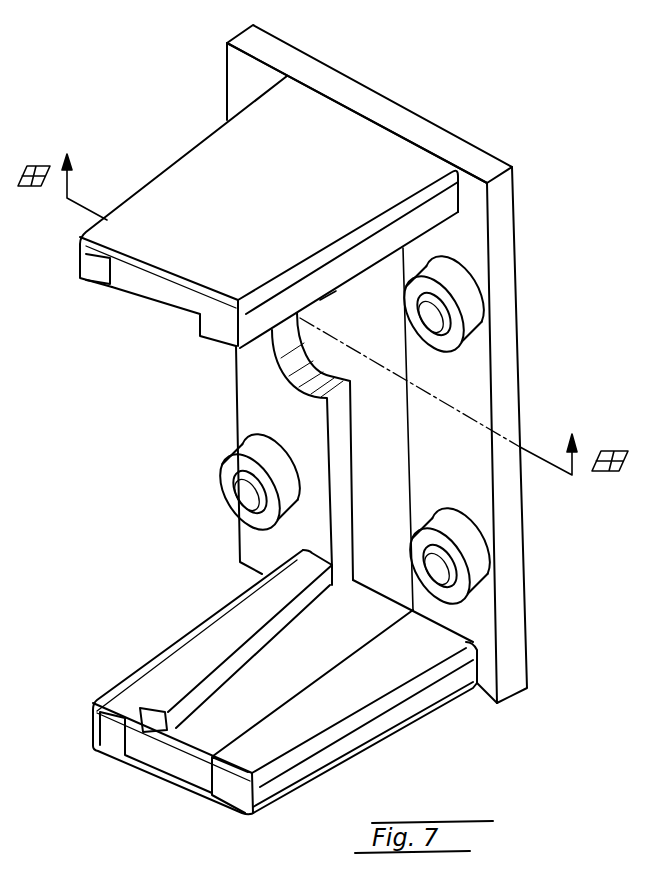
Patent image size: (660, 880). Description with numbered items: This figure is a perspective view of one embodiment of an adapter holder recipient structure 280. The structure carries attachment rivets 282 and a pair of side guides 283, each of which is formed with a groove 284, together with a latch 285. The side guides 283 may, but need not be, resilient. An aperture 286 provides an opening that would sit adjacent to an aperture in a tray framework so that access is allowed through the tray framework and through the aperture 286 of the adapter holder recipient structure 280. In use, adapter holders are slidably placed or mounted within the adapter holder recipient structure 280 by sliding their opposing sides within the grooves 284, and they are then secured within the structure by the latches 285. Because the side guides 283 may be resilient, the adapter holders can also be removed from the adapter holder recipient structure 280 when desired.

The adapter holder recipient structure 280 is at (212, 572).
The attachment rivets 282 is at (228, 505).
The side guides 283 is at (288, 210).
The grooves 284 is at (252, 697).
The latch 285 is at (150, 712).
The aperture 286 is at (383, 504).